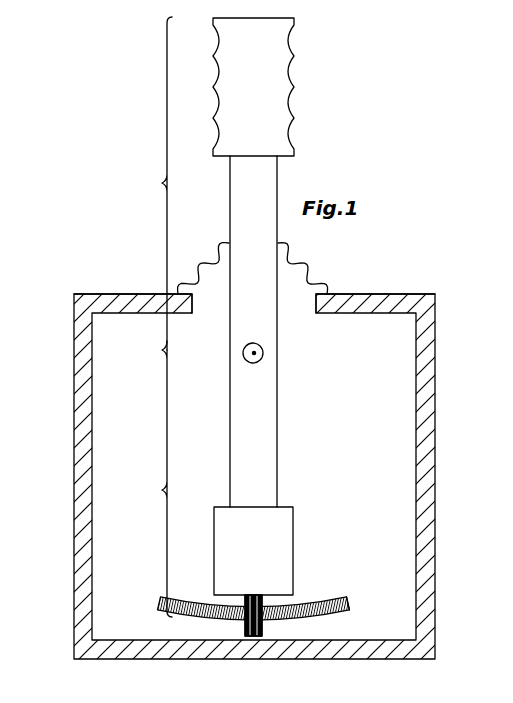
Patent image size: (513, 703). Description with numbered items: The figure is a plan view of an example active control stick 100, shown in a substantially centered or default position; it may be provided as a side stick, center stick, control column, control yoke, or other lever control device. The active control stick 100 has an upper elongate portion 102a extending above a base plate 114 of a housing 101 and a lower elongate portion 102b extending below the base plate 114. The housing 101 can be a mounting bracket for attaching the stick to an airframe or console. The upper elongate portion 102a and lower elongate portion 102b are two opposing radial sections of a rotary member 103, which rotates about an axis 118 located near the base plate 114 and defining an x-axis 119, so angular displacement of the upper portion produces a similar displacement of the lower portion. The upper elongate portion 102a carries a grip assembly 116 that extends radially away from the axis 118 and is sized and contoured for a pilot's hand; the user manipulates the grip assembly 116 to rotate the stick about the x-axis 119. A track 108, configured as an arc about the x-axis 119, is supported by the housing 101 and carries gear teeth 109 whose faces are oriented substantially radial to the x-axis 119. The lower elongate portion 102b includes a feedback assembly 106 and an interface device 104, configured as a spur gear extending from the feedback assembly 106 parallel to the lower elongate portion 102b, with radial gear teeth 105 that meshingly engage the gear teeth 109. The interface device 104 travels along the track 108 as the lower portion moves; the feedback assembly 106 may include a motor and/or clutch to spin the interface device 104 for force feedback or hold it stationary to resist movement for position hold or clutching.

The active control stick 100 is at (121, 156).
The housing 101 is at (438, 308).
The upper elongate portion 102a is at (142, 183).
The lower elongate portion 102b is at (142, 479).
The rotary member 103 is at (281, 176).
The interface device 104 is at (264, 600).
The radial gear teeth 105 is at (263, 633).
The feedback assembly 106 is at (288, 527).
The track 108 is at (330, 612).
The gear teeth 109 is at (351, 601).
The base plate 114 is at (378, 294).
The grip assembly 116 is at (297, 88).
The axis 118 is at (262, 346).
The x-axis 119 is at (254, 353).